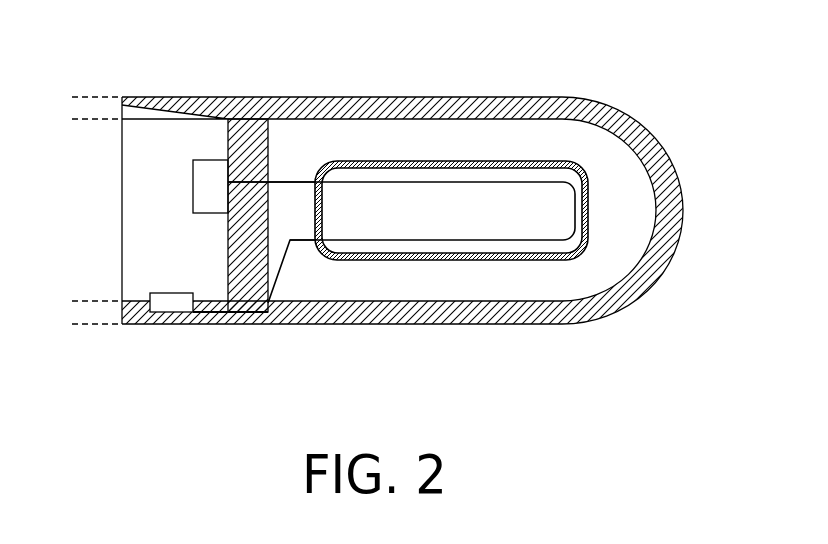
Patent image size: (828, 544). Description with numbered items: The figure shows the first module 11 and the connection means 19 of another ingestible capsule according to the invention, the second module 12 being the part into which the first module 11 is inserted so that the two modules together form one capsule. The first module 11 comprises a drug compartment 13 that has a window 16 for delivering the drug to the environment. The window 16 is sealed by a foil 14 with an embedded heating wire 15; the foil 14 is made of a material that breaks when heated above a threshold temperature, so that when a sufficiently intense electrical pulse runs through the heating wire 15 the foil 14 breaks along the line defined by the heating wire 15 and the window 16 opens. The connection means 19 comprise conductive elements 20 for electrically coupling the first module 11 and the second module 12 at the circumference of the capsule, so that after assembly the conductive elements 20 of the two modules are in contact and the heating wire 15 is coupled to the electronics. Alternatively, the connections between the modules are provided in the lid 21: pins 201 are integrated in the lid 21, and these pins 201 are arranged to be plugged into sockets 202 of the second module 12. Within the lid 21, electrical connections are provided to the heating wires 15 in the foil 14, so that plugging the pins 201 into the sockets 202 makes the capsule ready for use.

The first module 11 is at (660, 143).
The second module 12 is at (90, 108).
The drug compartment 13 is at (465, 130).
The foil 14 is at (576, 213).
The heating wire 15 is at (517, 241).
The window 16 is at (427, 261).
The connection means 19 is at (162, 108).
The conductive elements 20 is at (172, 312).
The lid 21 is at (246, 118).
The pins 201 is at (281, 198).
The sockets 202 is at (193, 183).